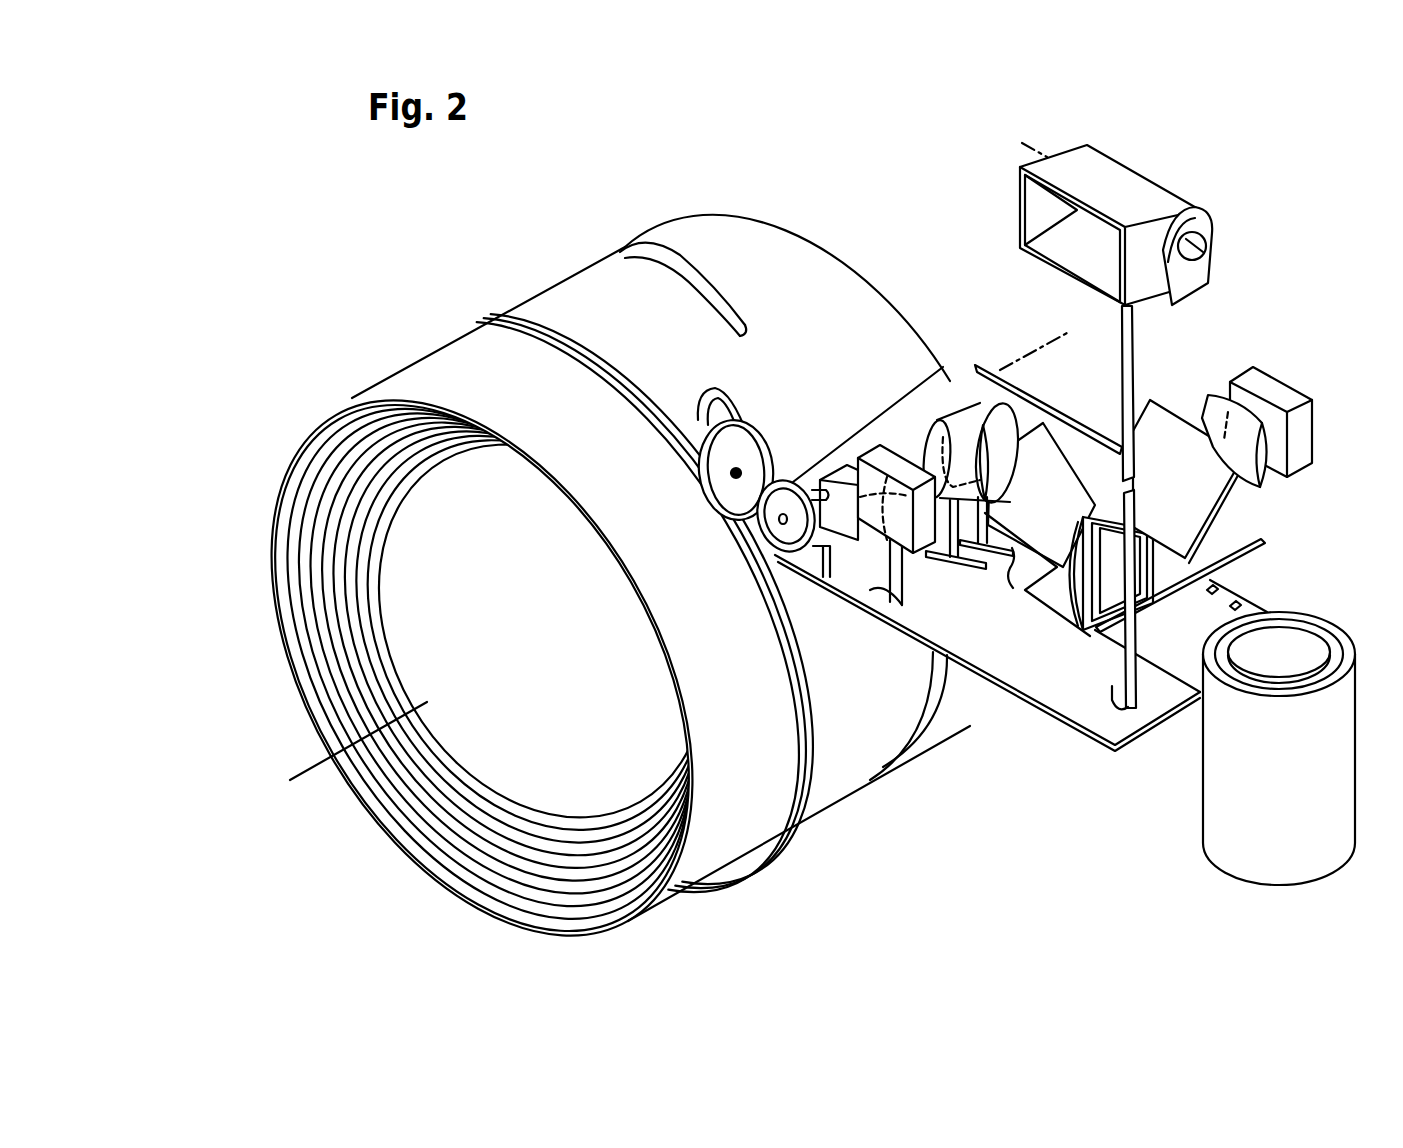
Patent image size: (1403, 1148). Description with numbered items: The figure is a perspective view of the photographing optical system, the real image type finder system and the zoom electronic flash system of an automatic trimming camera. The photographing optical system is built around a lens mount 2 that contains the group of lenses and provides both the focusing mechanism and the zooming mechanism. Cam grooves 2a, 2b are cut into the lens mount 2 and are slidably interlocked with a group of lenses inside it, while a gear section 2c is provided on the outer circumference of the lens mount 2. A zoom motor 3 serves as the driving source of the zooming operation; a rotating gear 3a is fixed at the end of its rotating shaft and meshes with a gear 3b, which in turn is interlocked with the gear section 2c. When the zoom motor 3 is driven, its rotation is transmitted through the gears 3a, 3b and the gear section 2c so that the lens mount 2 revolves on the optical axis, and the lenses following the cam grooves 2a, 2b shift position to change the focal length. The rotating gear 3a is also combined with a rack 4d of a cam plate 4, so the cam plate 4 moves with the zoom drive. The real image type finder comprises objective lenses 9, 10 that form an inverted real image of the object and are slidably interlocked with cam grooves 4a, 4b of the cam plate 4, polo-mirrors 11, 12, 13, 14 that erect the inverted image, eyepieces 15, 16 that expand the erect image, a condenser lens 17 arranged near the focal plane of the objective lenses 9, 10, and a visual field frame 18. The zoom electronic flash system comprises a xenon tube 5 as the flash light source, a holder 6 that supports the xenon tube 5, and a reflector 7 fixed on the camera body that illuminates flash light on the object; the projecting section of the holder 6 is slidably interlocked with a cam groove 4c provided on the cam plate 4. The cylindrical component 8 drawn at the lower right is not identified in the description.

The lens mount 2 is at (558, 298).
The cam groove 2a is at (657, 252).
The cam groove 2b is at (698, 388).
The gear section 2c is at (610, 362).
The zoom motor 3 is at (833, 458).
The rotating gear 3a is at (791, 480).
The gear 3b is at (760, 440).
The cam plate 4 is at (998, 657).
The cam groove 4a is at (900, 617).
The cam groove 4b is at (1020, 552).
The cam groove 4c is at (1143, 707).
The rack 4d is at (830, 566).
The xenon tube 5 is at (1197, 237).
The holder 6 is at (1197, 277).
The reflector 7 is at (1110, 170).
The battery 8 is at (1218, 818).
The objective lens 9 is at (872, 455).
The objective lens 10 is at (937, 375).
The polo-mirror 11 is at (1052, 413).
The polo-mirror 12 is at (1050, 473).
The polo-mirror 13 is at (1240, 557).
The polo-mirror 14 is at (1200, 495).
The eyepiece 15 is at (1220, 398).
The eyepiece 16 is at (1267, 388).
The condenser lens 17 is at (1073, 590).
The visual field frame 18 is at (1100, 600).